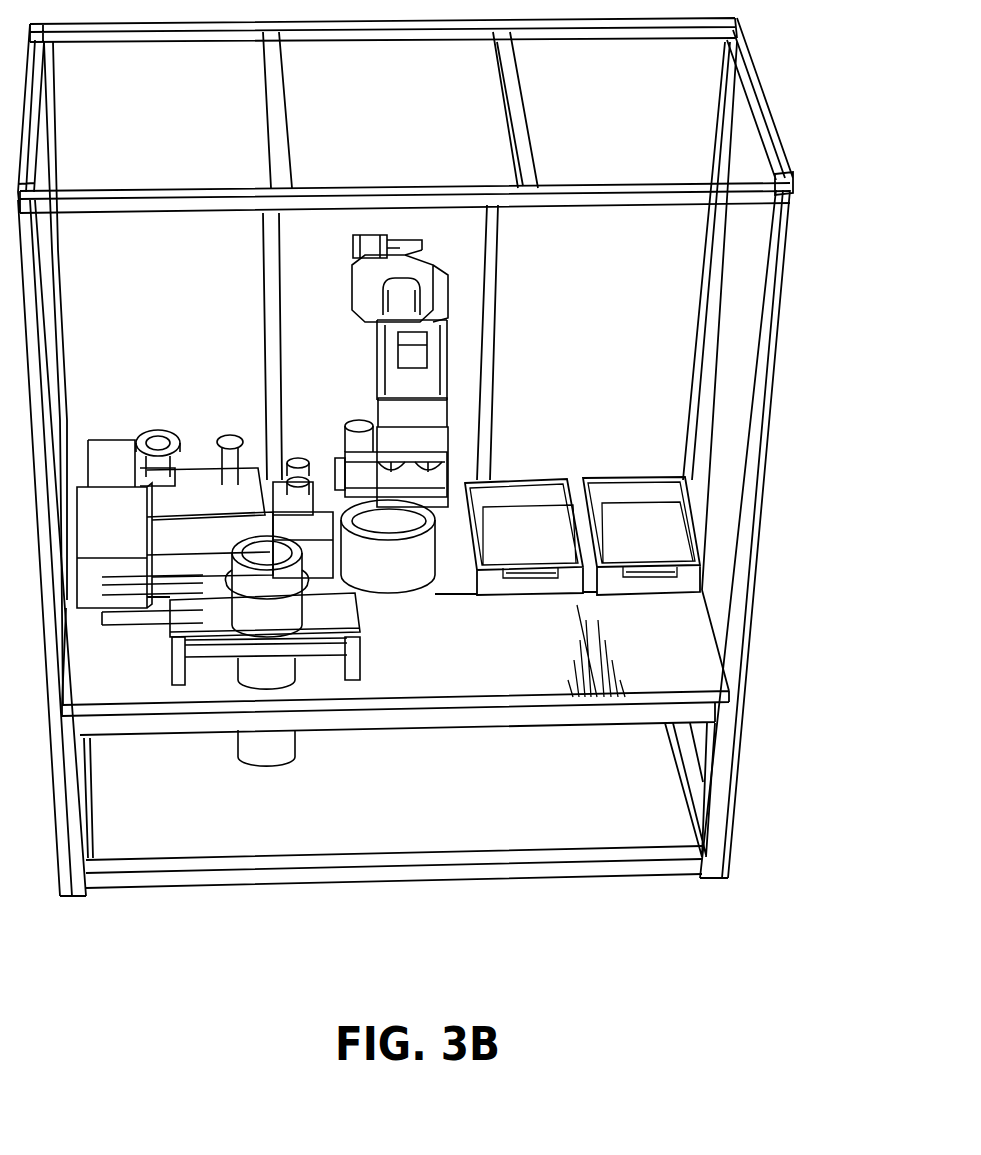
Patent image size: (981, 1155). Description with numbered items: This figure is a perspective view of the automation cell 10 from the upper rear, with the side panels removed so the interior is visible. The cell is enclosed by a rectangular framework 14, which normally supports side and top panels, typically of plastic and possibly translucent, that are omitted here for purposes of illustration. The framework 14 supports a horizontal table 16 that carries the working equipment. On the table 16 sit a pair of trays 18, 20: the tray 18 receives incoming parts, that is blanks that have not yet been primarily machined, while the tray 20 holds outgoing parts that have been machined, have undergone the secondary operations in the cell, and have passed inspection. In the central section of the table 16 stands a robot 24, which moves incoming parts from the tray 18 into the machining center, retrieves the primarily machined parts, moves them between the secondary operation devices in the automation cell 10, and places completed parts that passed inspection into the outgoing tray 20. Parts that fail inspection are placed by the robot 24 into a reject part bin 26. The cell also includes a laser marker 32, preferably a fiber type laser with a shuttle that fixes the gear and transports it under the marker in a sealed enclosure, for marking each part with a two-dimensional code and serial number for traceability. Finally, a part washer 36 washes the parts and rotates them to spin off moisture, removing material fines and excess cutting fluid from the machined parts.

The automation cell 10 is at (775, 69).
The rectangular framework 14 is at (758, 503).
The horizontal table 16 is at (663, 648).
The tray 18 is at (655, 545).
The tray 20 is at (537, 547).
The robot 24 is at (457, 274).
The reject part bin 26 is at (317, 478).
The laser marker 32 is at (110, 500).
The part washer 36 is at (342, 625).